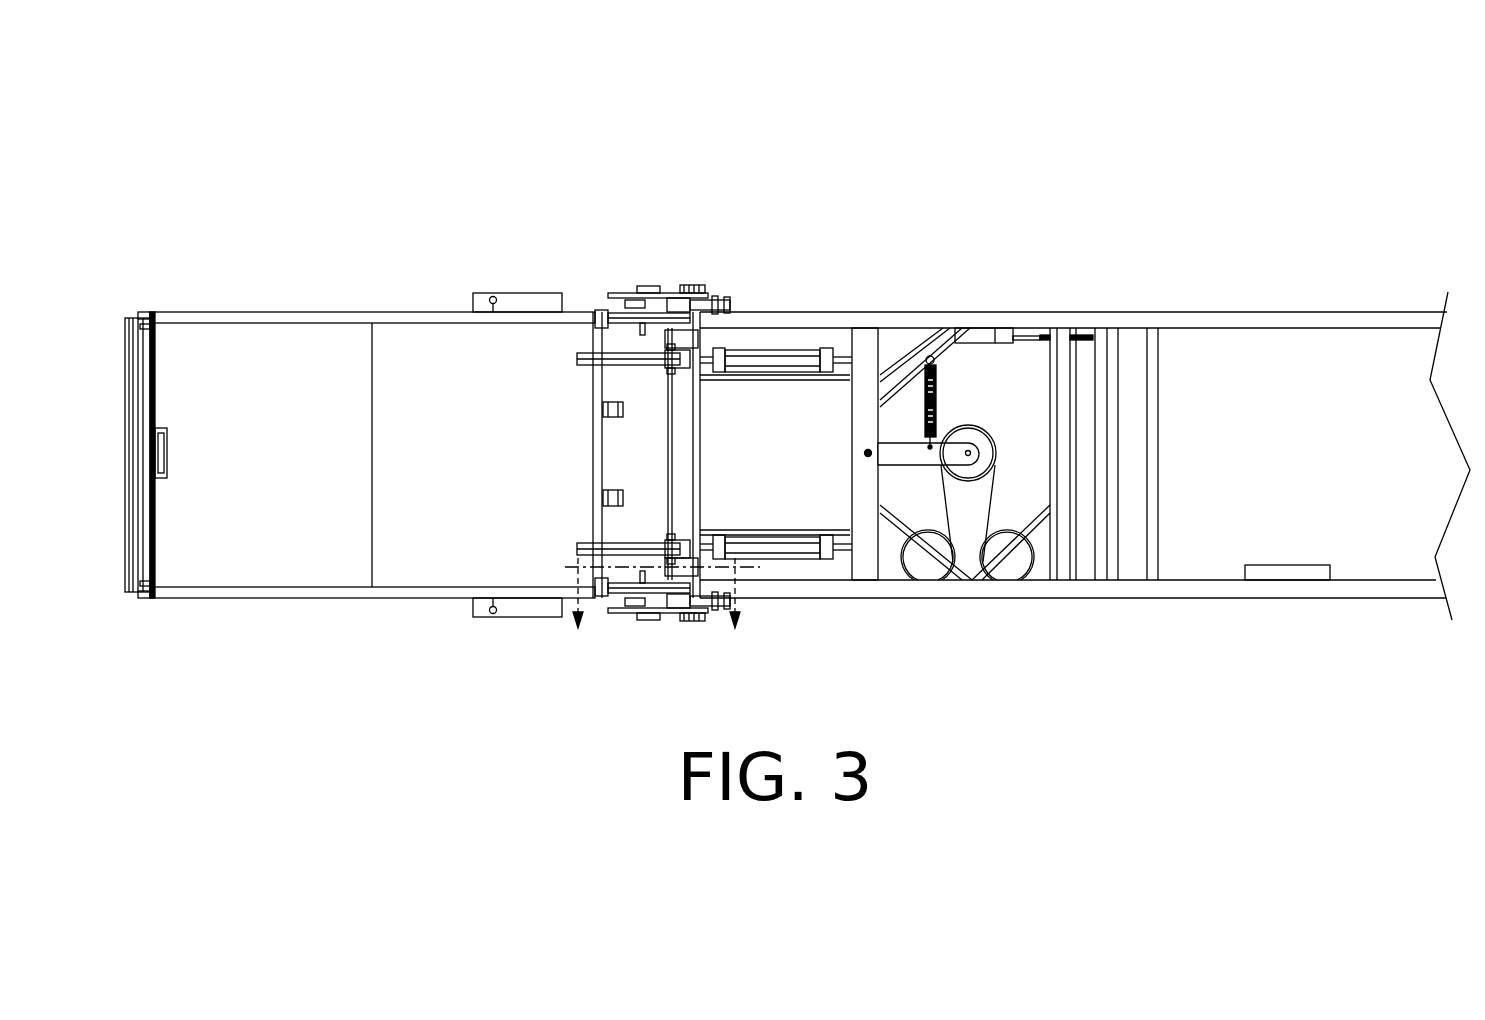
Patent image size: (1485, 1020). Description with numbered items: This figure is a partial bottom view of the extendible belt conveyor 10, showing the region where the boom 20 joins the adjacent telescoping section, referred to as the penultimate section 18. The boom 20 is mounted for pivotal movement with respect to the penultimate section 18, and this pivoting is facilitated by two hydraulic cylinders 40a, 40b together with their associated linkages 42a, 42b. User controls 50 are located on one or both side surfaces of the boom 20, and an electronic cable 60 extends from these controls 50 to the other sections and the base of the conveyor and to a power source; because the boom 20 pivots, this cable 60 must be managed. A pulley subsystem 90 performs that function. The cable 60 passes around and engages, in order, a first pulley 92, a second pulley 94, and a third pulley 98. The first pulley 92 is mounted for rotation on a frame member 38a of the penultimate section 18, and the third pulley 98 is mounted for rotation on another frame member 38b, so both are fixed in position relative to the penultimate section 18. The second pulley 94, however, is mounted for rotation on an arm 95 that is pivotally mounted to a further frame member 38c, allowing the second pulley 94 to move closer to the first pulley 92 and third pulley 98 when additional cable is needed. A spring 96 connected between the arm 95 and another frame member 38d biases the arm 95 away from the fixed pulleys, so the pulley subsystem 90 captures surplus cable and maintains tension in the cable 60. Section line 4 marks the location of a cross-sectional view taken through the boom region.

The extendible belt conveyor 10 is at (183, 157).
The penultimate section 18 is at (1073, 311).
The boom 20 is at (287, 310).
The user controls 50 is at (520, 293).
The linkage 42a is at (615, 543).
The linkage 42b is at (622, 350).
The hydraulic cylinder 40a is at (770, 560).
The hydraulic cylinder 40b is at (770, 348).
The electronic cable 60 is at (993, 503).
The frame member 38a is at (892, 540).
The frame member 38b is at (1002, 573).
The frame member 38c is at (856, 456).
The frame member 38d is at (906, 362).
The pulley subsystem 90 is at (972, 625).
The first pulley 92 is at (912, 572).
The second pulley 94 is at (970, 425).
The arm 95 is at (916, 468).
The spring 96 is at (940, 385).
The third pulley 98 is at (1025, 572).
The section line 4- 4 is at (662, 612).